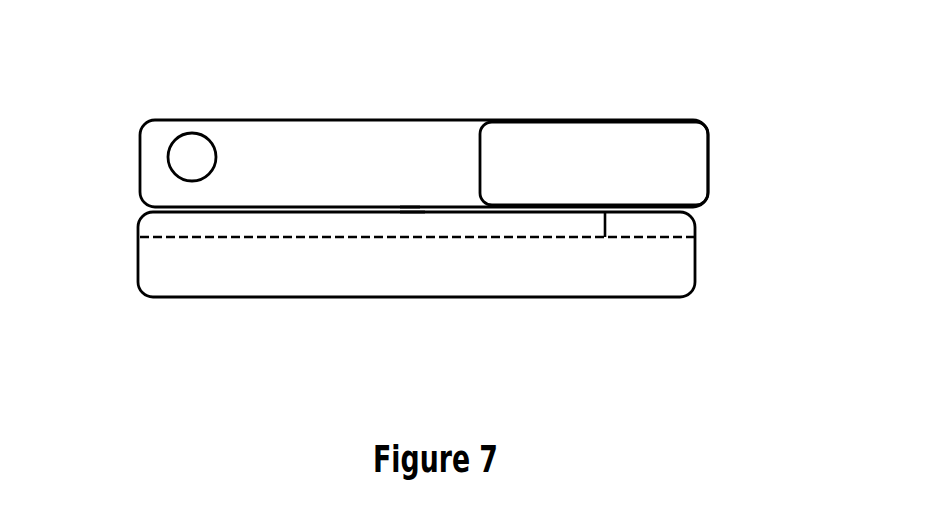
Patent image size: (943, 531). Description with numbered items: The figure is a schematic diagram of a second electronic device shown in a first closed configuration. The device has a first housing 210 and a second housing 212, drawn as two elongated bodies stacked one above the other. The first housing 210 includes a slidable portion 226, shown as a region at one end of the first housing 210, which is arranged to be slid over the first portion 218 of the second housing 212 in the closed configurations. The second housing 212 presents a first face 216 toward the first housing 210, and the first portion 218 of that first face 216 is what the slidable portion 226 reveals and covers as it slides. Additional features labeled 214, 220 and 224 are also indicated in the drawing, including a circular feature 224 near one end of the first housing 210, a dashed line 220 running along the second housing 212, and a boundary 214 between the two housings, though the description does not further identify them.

The first housing 210 is at (275, 147).
The second housing 212 is at (277, 283).
The bottom surface of first panel 214 is at (408, 208).
The first face 216 is at (412, 211).
The first portion 218 is at (640, 223).
The fold line 220 is at (535, 223).
The aperture 224 is at (185, 155).
The slidable portion 226 is at (588, 167).